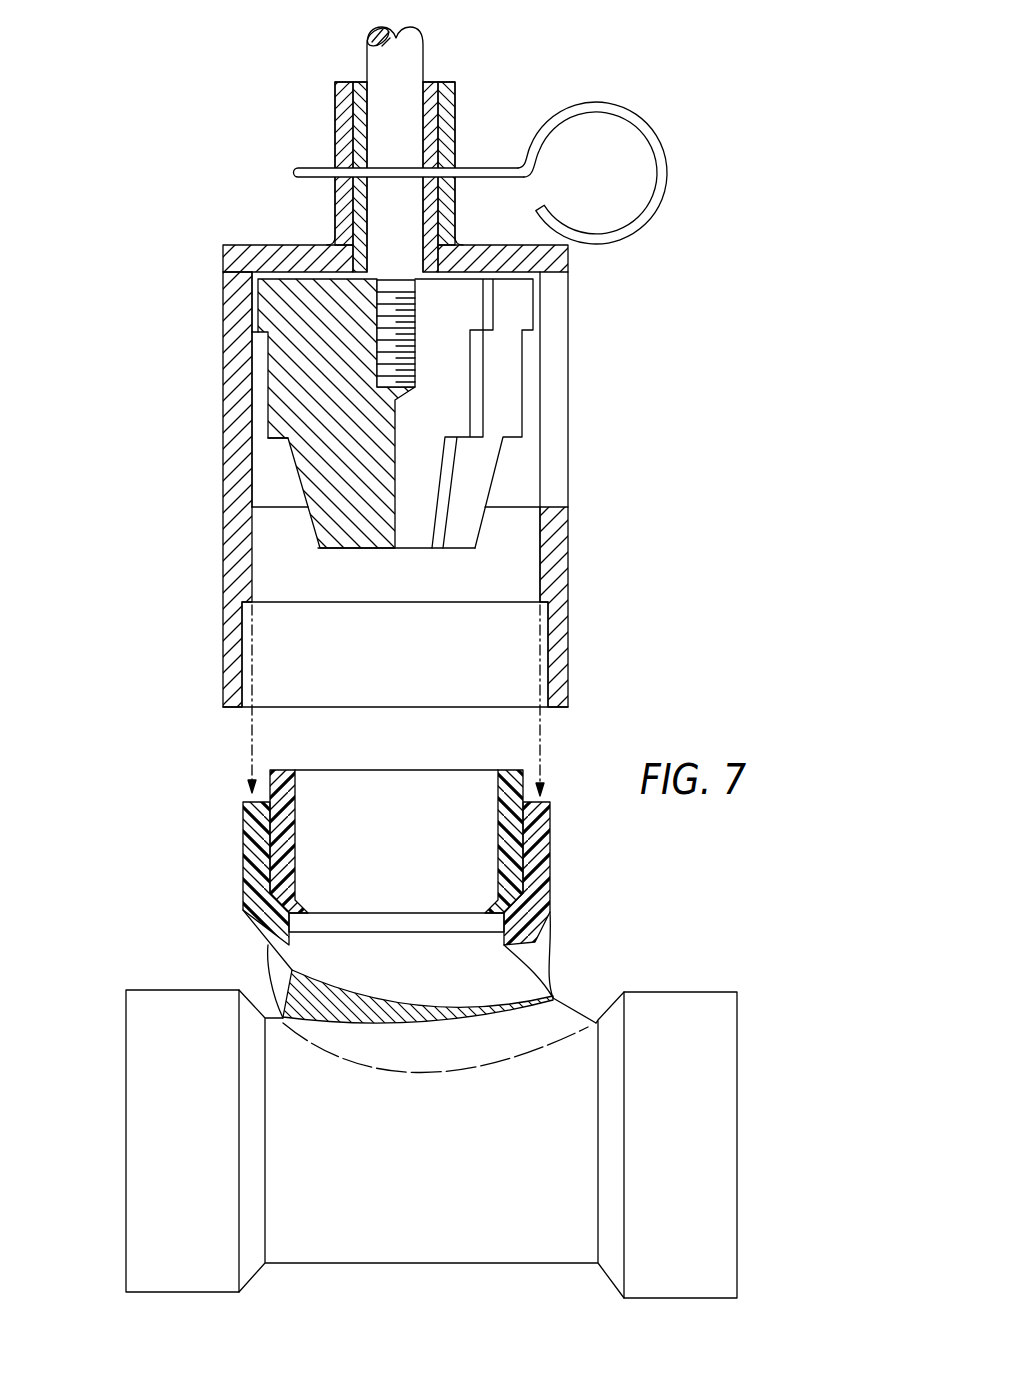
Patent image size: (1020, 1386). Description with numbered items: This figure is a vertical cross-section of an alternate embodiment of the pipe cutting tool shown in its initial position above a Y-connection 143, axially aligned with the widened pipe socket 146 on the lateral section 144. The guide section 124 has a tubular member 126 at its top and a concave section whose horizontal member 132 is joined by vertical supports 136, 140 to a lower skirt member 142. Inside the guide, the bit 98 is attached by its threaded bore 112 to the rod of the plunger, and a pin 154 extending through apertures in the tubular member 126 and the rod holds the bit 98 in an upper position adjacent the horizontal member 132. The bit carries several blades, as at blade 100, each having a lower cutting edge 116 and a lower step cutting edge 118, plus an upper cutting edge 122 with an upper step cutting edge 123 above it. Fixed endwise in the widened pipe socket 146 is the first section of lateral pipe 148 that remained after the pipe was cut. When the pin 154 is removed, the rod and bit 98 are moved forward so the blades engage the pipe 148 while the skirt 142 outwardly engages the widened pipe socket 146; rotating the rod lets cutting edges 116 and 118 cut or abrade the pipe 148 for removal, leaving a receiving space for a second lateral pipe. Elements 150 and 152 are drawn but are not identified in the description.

The bit 98 is at (275, 263).
The blade 100 is at (260, 290).
The threaded bore 112 is at (415, 325).
The cutting edge 116 is at (312, 518).
The lower step cutting edge 118 is at (283, 441).
The cutting edge 122 is at (255, 370).
The upper step cutting edge 123 is at (262, 333).
The guide section 124 is at (138, 303).
The tubular member 126 is at (335, 113).
The horizontal member 132 is at (237, 245).
The vertical support 136 is at (222, 475).
The vertical support 140 is at (568, 385).
The lower skirt member 142 is at (568, 548).
The Y-connection 143 is at (636, 962).
The lateral section 144 is at (270, 978).
The widened pipe socket 146 is at (242, 834).
The first section of lateral pipe 148 is at (282, 770).
The rod assembly 150 is at (346, 49).
The actuating rod 152 is at (420, 60).
The pin 154 is at (632, 108).